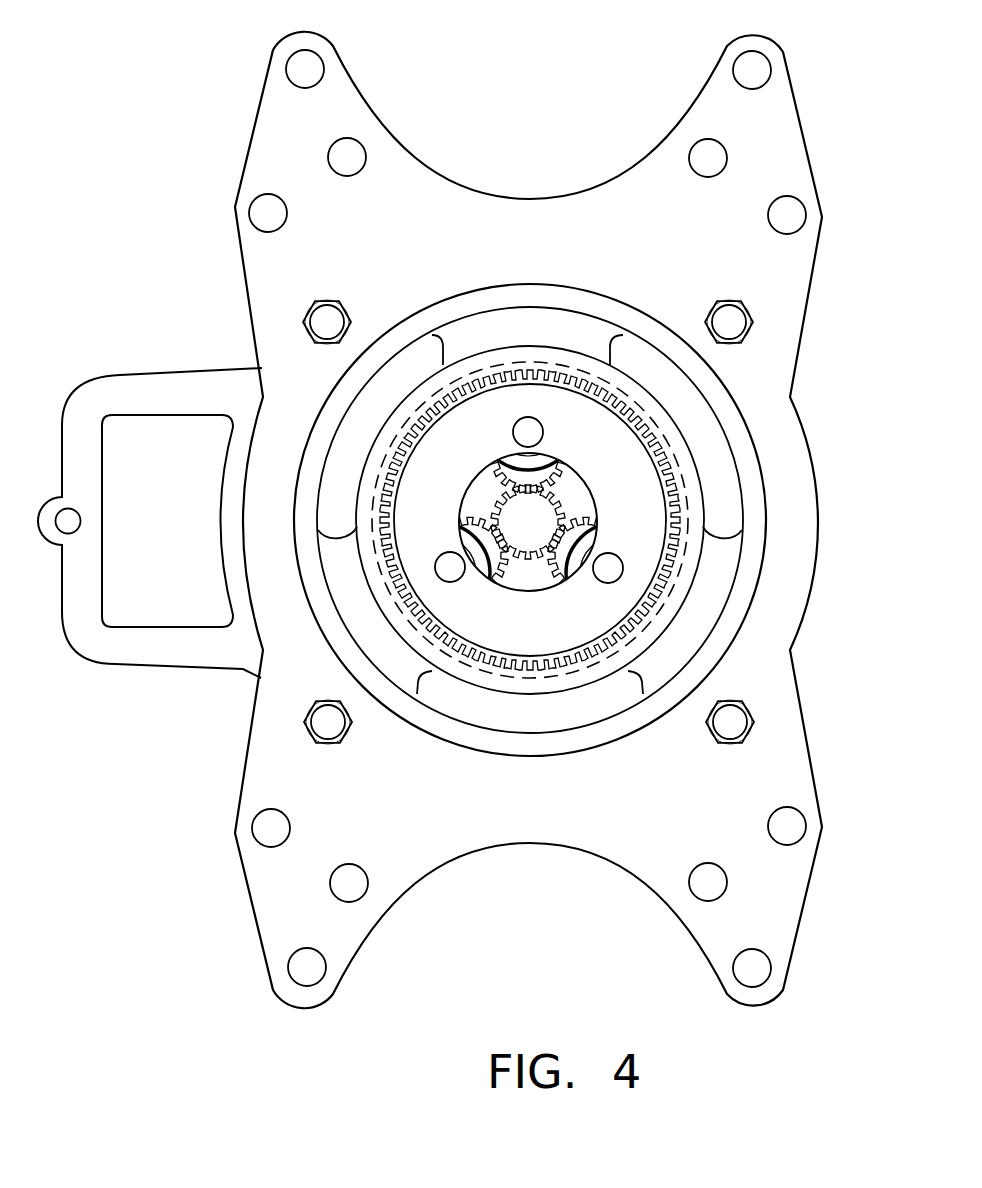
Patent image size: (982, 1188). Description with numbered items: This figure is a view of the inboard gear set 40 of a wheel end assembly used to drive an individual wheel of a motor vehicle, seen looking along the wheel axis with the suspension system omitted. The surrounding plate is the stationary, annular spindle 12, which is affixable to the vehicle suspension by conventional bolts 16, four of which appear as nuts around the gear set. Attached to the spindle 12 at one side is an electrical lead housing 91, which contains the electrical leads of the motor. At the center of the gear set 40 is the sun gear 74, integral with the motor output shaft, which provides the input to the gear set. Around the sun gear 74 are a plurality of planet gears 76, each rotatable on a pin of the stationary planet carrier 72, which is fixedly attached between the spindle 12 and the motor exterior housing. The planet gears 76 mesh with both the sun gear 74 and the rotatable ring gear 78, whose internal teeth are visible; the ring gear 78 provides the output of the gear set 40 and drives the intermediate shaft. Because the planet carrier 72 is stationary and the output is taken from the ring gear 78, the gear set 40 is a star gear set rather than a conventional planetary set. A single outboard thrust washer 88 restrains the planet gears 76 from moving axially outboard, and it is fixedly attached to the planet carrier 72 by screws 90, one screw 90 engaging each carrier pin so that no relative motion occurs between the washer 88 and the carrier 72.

The spindle 12 is at (788, 112).
The bolts 16 is at (326, 312).
The inboard gear set 40 is at (470, 290).
The planet carrier 72 is at (582, 332).
The sun gear 74 is at (544, 535).
The planet gears 76 is at (470, 502).
The ring gear 78 is at (663, 620).
The thrust washer 88 is at (490, 624).
The screws 90 is at (522, 432).
The electrical lead housing 91 is at (103, 392).